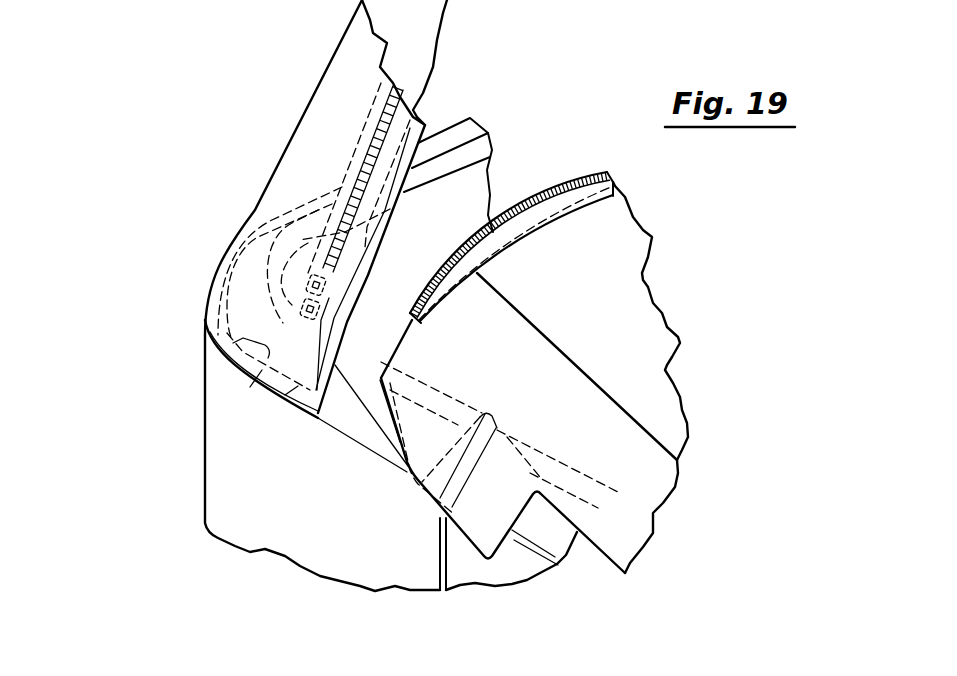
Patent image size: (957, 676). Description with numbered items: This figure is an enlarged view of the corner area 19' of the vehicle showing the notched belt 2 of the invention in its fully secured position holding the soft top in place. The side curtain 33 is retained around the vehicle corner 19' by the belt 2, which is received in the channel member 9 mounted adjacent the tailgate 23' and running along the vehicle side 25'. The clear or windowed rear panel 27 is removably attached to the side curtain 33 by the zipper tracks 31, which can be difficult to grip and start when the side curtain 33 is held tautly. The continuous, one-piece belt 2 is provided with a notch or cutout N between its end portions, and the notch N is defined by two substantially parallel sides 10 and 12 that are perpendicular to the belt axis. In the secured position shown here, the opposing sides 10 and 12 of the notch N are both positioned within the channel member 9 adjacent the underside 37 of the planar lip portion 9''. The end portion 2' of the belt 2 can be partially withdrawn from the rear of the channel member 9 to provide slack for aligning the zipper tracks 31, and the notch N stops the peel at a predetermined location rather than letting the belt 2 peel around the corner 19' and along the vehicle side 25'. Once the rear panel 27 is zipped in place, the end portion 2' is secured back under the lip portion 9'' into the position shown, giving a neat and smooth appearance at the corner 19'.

The side curtain 33 is at (340, 107).
The vehicle side 25' is at (458, 140).
The zipper tracks 31 is at (533, 196).
The notched belt 2 is at (245, 297).
The corner area 19' is at (123, 318).
The notch side 12 is at (250, 319).
The notch N is at (245, 333).
The notch side 10 is at (267, 370).
The end portion 2' is at (276, 427).
The underside 37 is at (357, 350).
The channel member 9 is at (363, 300).
The lip portion 9'' is at (334, 285).
The rear panel 27 is at (624, 312).
The tailgate 23' is at (499, 501).